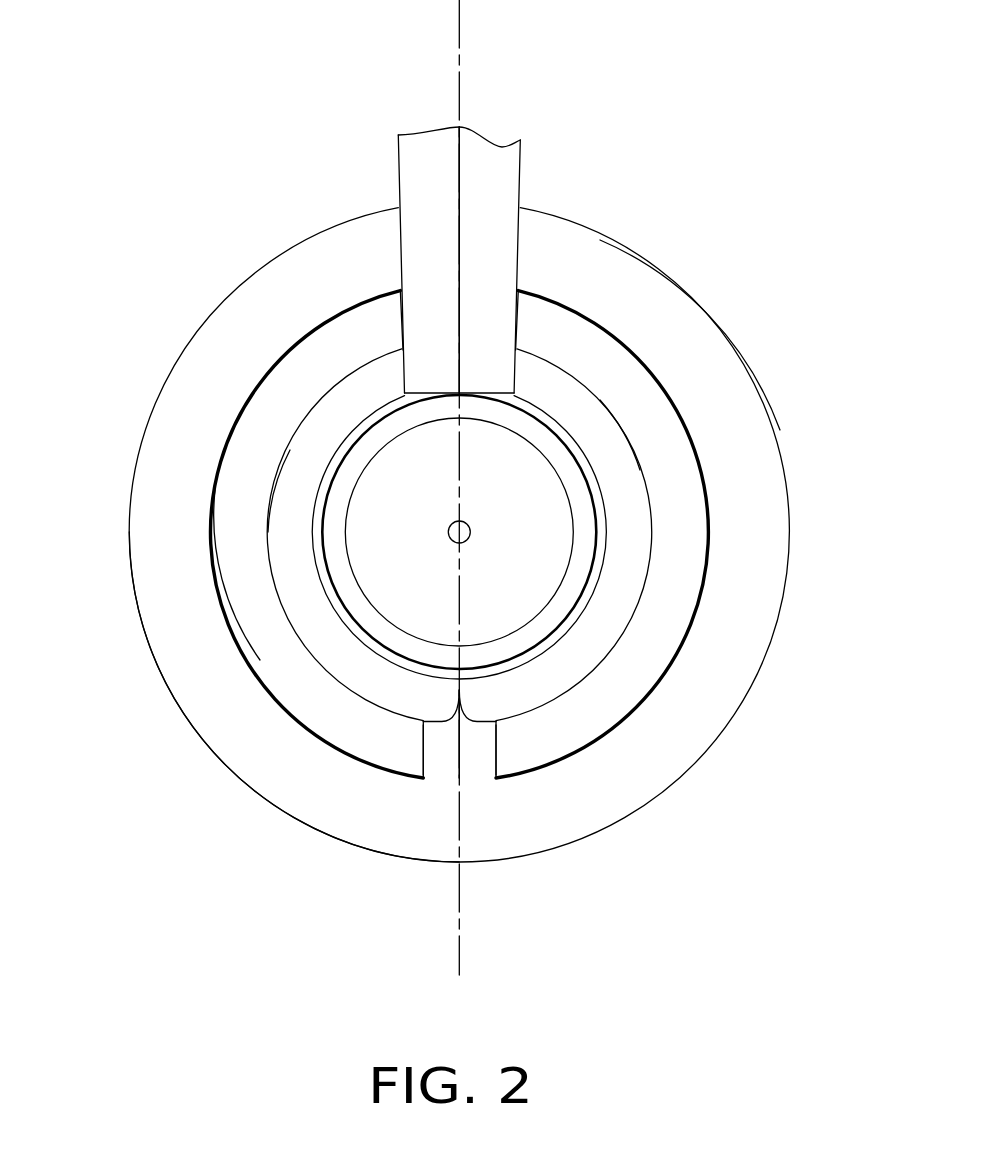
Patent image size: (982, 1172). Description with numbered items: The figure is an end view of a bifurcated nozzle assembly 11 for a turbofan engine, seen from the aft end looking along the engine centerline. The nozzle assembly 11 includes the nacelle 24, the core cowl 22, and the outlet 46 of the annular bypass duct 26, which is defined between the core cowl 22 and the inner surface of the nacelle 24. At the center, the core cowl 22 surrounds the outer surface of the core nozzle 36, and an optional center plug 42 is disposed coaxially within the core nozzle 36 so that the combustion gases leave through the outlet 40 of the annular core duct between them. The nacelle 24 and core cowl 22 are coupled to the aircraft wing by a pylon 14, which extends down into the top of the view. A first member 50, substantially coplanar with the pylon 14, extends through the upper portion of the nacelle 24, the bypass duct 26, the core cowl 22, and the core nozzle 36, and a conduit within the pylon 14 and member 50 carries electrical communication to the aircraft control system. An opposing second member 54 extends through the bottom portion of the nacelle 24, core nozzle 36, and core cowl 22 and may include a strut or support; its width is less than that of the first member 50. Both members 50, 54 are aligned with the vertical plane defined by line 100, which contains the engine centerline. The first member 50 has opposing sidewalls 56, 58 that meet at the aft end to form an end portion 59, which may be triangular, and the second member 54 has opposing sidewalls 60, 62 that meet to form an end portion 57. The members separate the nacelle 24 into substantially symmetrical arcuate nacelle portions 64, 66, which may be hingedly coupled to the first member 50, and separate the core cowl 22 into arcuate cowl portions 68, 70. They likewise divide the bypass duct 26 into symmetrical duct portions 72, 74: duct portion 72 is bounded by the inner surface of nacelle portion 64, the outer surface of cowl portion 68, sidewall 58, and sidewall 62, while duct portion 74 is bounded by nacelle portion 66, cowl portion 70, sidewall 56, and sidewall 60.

The line 100 is at (522, 78).
The nozzle assembly 11 is at (165, 107).
The pylon 14 is at (502, 157).
The core cowl 22 is at (599, 422).
The nacelle 24 is at (705, 367).
The annular bypass duct 26 is at (272, 630).
The core nozzle 36 is at (359, 624).
The outlet 40 is at (547, 620).
The center plug 42 is at (530, 536).
The outlet 46 is at (257, 562).
The first member 50 is at (437, 208).
The second member 54 is at (448, 762).
The sidewall 56 is at (393, 327).
The end portion 57 is at (462, 747).
The sidewall 58 is at (525, 327).
The end portion 59 is at (461, 235).
The sidewall 60 is at (417, 741).
The sidewall 62 is at (500, 741).
The arcuate nacelle portion 64 is at (752, 615).
The arcuate nacelle portion 66 is at (173, 648).
The arcuate cowl portion 68 is at (633, 513).
The arcuate cowl portion 70 is at (288, 512).
The duct portion 72 is at (682, 462).
The duct portion 74 is at (260, 427).